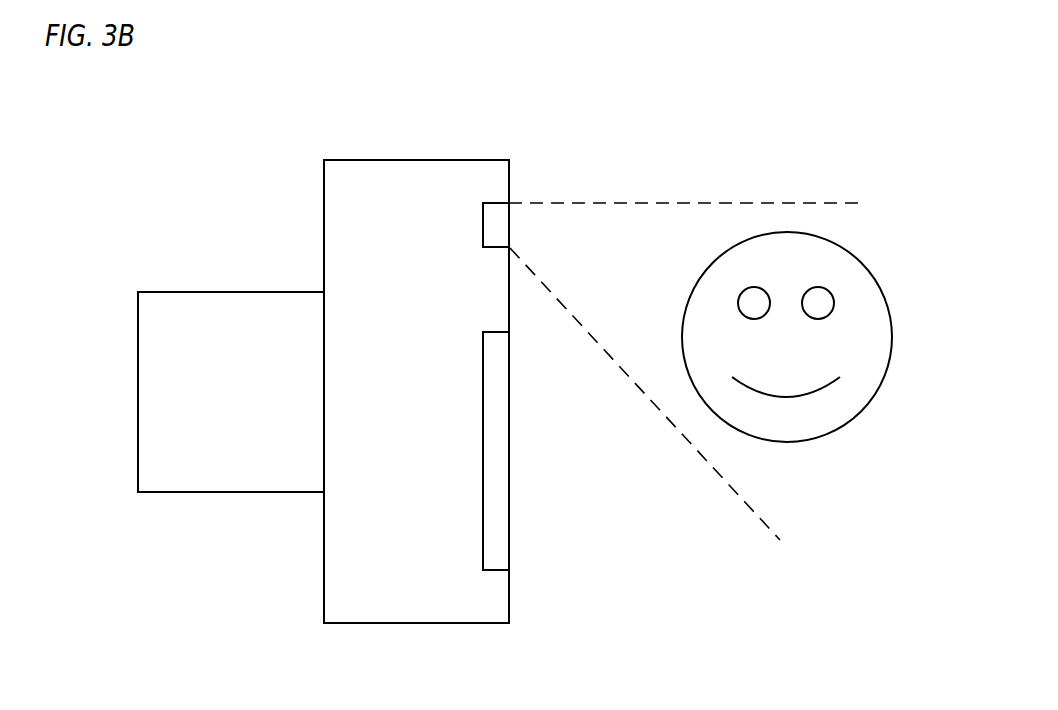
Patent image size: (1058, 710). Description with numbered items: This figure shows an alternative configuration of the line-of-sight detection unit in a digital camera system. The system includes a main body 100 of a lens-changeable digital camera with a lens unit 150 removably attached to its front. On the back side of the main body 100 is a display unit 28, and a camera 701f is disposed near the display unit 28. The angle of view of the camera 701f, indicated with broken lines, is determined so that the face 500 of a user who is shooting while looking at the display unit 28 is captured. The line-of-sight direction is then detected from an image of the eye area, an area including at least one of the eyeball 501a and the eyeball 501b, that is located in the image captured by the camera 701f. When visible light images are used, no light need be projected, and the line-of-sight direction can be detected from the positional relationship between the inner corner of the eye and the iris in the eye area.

The main body 100 is at (350, 158).
The lens unit 150 is at (165, 290).
The camera 701f is at (493, 200).
The display unit 28 is at (497, 500).
The subject face 500 is at (873, 275).
The eyeball 501a is at (748, 287).
The eyeball 501b is at (815, 287).